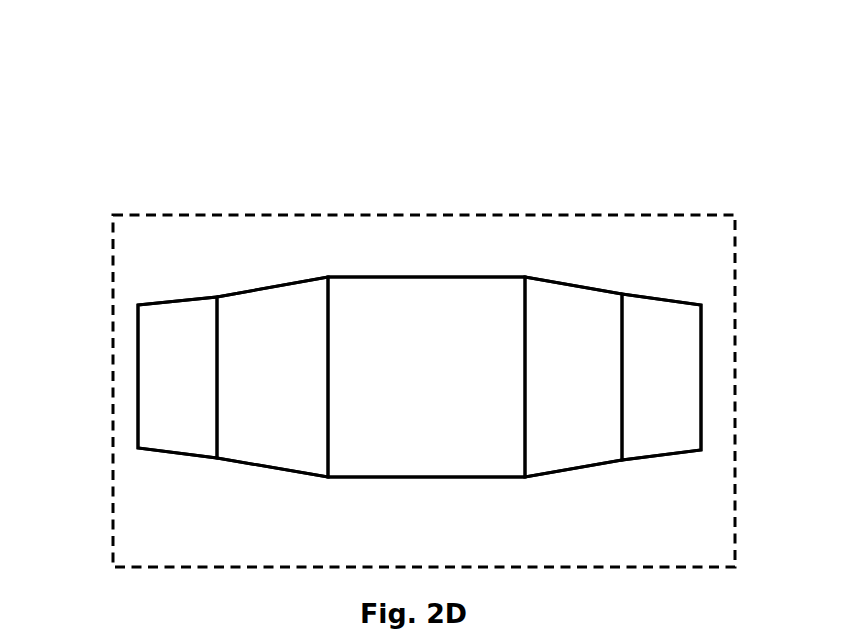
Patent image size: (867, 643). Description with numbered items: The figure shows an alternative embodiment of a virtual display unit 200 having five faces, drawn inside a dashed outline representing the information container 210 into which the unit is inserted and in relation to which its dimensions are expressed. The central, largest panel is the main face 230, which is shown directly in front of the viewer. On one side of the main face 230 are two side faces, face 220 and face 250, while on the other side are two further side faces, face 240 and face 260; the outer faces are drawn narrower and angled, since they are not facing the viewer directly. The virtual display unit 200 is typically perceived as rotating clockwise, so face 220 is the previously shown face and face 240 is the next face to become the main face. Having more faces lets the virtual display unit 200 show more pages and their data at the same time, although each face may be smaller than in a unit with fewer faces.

The virtual display unit 200 is at (137, 377).
The information container 210 is at (701, 214).
The face 220 is at (254, 317).
The main face 230 is at (379, 313).
The face 240 is at (573, 320).
The face 250 is at (178, 337).
The face 260 is at (672, 325).